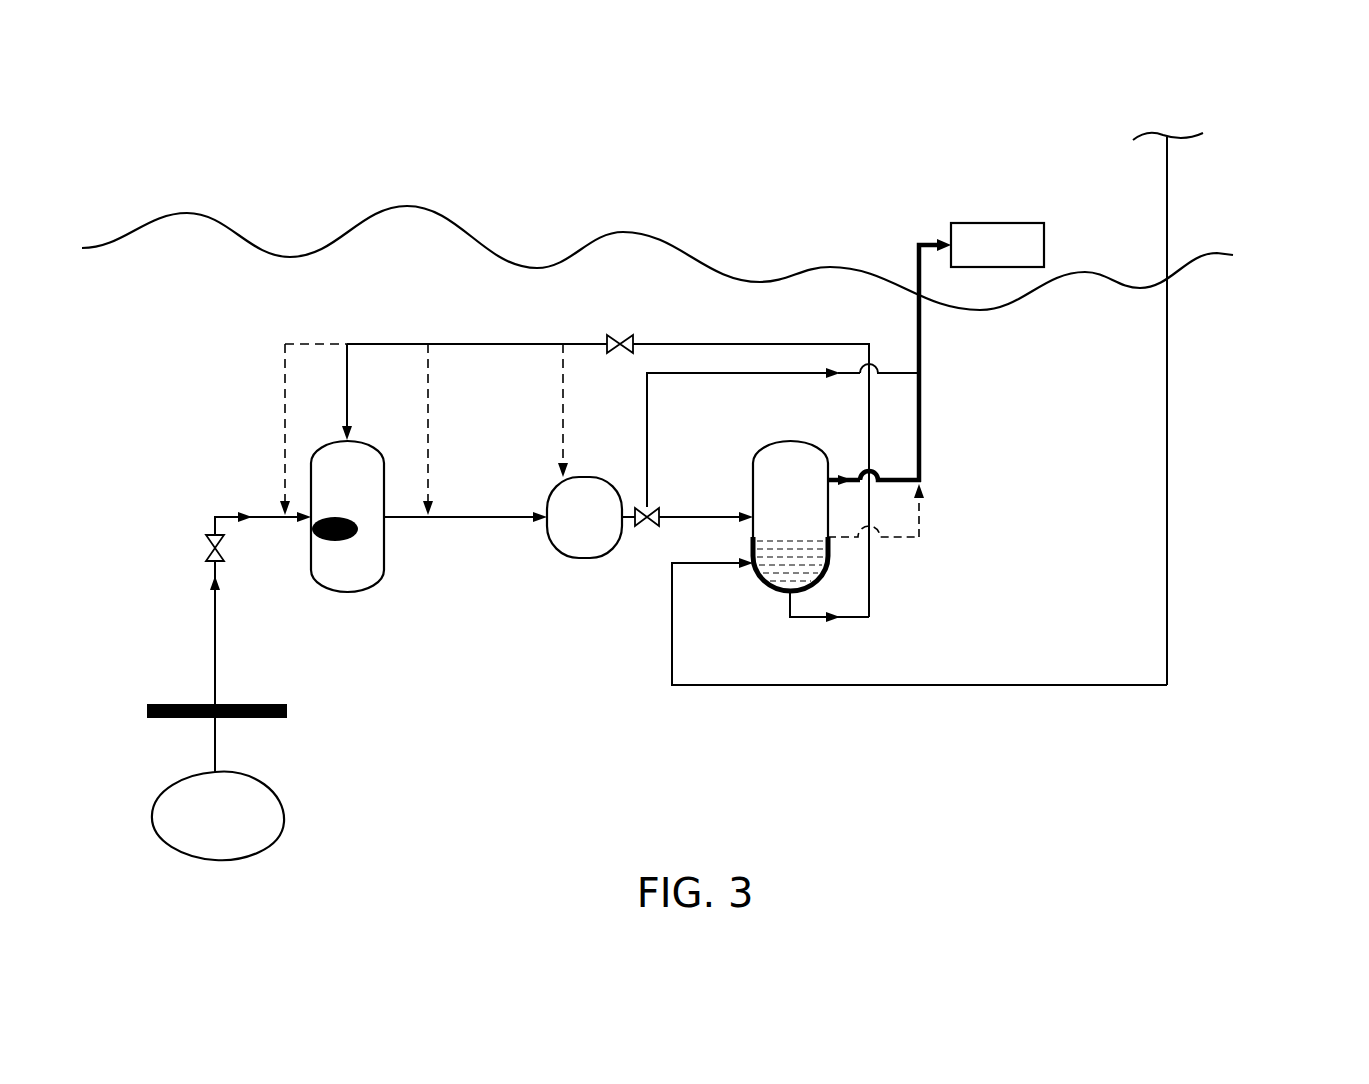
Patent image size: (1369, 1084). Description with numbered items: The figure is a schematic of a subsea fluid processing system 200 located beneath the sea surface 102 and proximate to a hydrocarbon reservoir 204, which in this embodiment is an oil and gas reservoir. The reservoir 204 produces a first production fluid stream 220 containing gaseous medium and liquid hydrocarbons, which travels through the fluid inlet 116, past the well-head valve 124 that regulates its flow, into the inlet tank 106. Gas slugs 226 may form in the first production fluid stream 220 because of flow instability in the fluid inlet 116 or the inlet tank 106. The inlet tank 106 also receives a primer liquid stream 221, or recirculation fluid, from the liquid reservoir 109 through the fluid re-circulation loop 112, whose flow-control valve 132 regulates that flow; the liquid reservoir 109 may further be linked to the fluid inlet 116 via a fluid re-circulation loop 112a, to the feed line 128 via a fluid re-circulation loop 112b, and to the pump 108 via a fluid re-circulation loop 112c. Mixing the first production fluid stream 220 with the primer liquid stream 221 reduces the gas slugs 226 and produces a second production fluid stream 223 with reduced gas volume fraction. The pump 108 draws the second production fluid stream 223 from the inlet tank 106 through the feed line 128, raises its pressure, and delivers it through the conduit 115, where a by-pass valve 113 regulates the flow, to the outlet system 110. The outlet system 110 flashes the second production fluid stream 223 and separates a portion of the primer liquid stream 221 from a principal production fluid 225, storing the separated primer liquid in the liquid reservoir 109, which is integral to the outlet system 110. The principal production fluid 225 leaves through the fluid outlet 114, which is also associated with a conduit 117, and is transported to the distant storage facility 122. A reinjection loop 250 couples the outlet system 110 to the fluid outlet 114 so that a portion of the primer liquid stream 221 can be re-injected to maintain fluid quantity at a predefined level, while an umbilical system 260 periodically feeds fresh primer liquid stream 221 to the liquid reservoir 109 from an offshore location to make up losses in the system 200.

The sea surface 102 is at (456, 217).
The inlet tank 106 is at (386, 547).
The pump 108 is at (590, 567).
The liquid reservoir 109 is at (749, 550).
The outlet system 110 is at (770, 434).
The fluid re-circulation loop 112 is at (352, 346).
The fluid re-circulation loop 112a is at (284, 359).
The fluid re-circulation loop 112b is at (427, 359).
The fluid re-circulation loop 112c is at (562, 359).
The by-pass valve 113 is at (636, 508).
The fluid outlet 114 is at (922, 415).
The conduit 115 is at (687, 516).
The fluid inlet 116 is at (213, 645).
The conduit 117 is at (645, 432).
The distant storage facility 122 is at (1046, 242).
The well-head valve 124 is at (208, 545).
The feed line 128 is at (498, 515).
The flow-control valve 132 is at (618, 335).
The subsea fluid processing system 200 is at (1250, 333).
The hydrocarbon reservoir 204 is at (150, 801).
The first production fluid stream 220 is at (247, 513).
The primer liquid stream 221 is at (343, 432).
The second production fluid stream 223 is at (745, 515).
The principal production fluid 225 is at (848, 478).
The gas slugs 226 is at (340, 517).
The reinjection loop 250 is at (923, 526).
The umbilical system 260 is at (1170, 510).